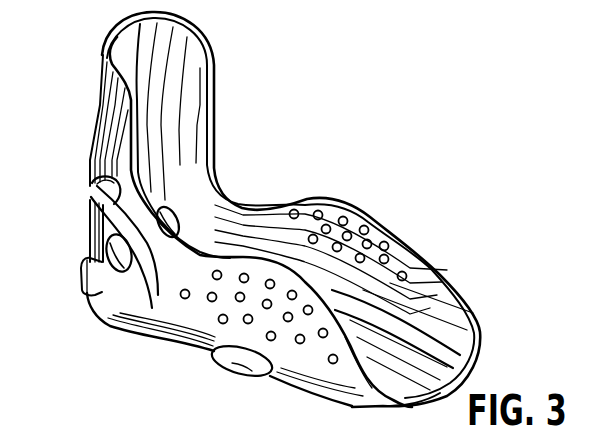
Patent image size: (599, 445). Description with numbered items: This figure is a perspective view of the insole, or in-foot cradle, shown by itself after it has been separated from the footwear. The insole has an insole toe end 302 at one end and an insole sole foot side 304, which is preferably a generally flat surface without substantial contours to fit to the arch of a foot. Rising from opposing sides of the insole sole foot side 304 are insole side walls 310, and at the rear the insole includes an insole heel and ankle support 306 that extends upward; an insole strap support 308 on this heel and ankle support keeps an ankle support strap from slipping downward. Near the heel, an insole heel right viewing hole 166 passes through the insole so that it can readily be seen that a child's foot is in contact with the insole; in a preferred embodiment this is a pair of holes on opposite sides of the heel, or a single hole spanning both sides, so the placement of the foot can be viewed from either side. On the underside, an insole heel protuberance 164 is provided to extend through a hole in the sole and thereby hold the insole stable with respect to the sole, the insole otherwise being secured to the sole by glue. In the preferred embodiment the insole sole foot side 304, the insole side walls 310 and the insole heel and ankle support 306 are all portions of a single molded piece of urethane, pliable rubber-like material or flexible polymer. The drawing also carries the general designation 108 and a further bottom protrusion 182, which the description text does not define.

The footwear base section 108 is at (350, 180).
The insole heel and ankle support 306 is at (106, 75).
The insole strap support 308 is at (116, 178).
The insole heel right viewing hole 166 is at (110, 246).
The insole heel protuberance 164 is at (86, 292).
The bottom protrusion 182 is at (232, 361).
The insole side wall 310 is at (357, 217).
The insole sole foot side 304 is at (470, 312).
The insole toe end 302 is at (485, 340).